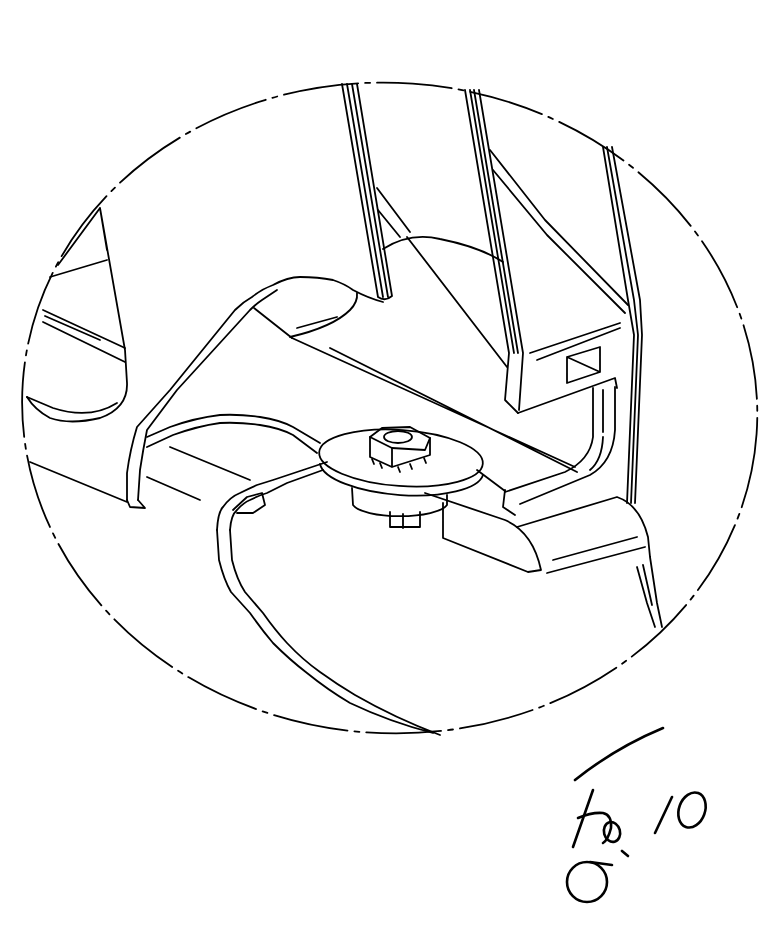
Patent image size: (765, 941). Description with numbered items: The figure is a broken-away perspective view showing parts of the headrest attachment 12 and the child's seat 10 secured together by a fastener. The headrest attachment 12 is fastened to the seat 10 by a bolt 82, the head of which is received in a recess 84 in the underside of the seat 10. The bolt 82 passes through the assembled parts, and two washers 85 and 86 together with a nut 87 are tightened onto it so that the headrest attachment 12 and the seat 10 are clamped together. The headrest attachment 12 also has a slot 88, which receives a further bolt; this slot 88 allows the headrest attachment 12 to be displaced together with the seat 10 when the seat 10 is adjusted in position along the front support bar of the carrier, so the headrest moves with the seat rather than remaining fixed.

The child's seat 10 is at (152, 670).
The headrest attachment 12 is at (213, 81).
The bolt 82 is at (403, 526).
The recess 84 is at (435, 522).
The washer 85 is at (370, 502).
The washer 86 is at (350, 472).
The nut 87 is at (420, 436).
The slot 88 is at (90, 337).